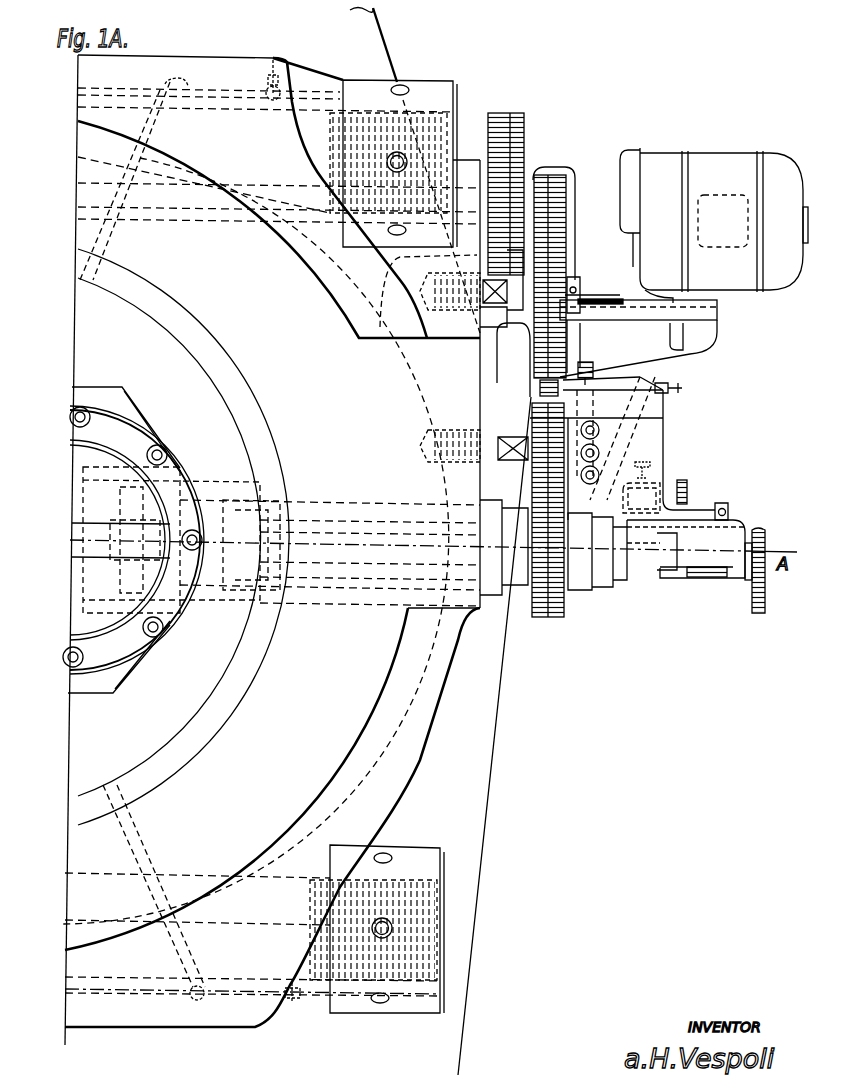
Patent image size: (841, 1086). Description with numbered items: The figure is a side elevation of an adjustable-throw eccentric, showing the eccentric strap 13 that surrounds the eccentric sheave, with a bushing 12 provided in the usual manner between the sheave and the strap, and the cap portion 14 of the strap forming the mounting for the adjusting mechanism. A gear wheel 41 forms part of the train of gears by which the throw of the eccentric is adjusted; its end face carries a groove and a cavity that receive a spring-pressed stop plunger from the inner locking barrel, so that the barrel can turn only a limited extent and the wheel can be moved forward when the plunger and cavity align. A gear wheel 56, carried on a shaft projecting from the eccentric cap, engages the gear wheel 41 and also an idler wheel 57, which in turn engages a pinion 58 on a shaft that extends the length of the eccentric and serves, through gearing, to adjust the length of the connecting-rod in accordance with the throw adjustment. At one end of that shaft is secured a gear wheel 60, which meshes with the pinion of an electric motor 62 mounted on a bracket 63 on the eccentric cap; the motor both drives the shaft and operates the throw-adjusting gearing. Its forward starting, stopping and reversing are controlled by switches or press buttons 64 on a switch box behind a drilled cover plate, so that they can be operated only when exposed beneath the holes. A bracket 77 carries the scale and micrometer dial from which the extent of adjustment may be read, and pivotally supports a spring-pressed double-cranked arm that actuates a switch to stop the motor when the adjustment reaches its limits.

The bushing 12 is at (180, 313).
The eccentric strap 13 is at (365, 690).
The cap portion 14 is at (230, 133).
The gear wheel 41 is at (560, 598).
The gear wheel 56 is at (637, 470).
The idler wheel 57 is at (570, 187).
The pinion 58 is at (547, 180).
The gear wheel 60 is at (517, 132).
The electric motor 62 is at (718, 175).
The bracket 63 is at (697, 336).
The switches or press buttons 64 is at (560, 497).
The bracket 77 is at (712, 537).